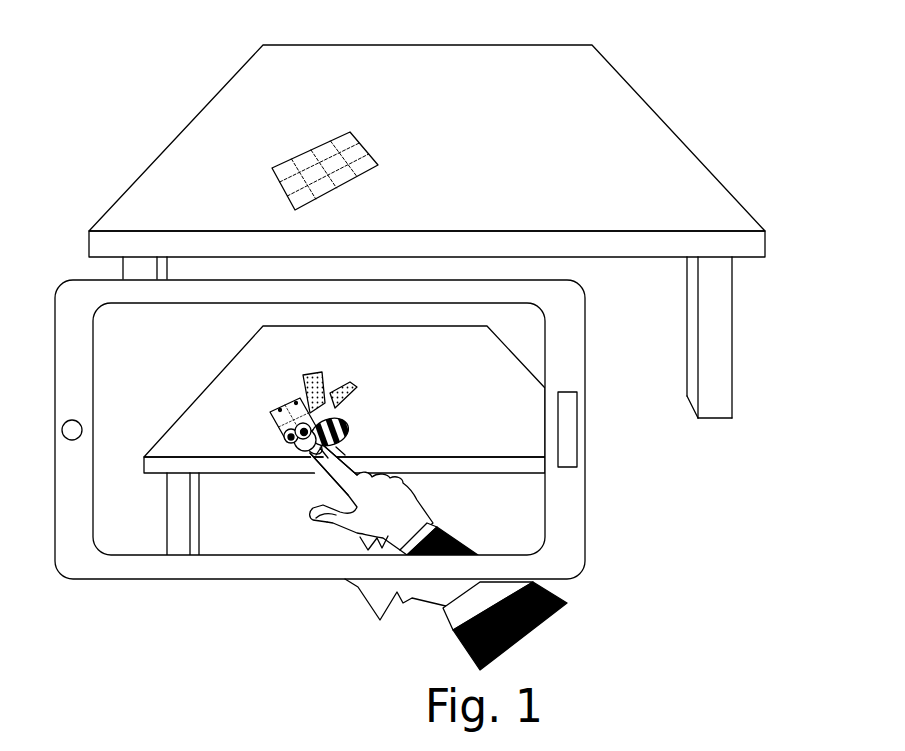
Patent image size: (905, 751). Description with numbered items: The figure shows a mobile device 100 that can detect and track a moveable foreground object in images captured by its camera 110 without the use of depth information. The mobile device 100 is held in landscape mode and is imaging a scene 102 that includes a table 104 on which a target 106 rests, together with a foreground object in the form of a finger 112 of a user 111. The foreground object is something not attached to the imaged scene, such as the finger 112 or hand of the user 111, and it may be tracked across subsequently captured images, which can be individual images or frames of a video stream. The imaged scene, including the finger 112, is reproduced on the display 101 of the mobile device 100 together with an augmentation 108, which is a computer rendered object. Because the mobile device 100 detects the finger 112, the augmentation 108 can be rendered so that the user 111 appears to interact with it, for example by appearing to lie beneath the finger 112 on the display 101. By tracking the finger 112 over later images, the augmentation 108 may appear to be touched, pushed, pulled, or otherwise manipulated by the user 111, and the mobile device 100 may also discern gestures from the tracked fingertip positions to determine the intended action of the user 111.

The mobile device 100 is at (125, 580).
The display 101 is at (270, 557).
The scene 102 is at (262, 124).
The table 104 is at (700, 160).
The target 106 is at (356, 152).
The augmentation 108 is at (348, 430).
The camera 110 is at (80, 422).
The user 111 is at (567, 600).
The finger 112 is at (317, 463).